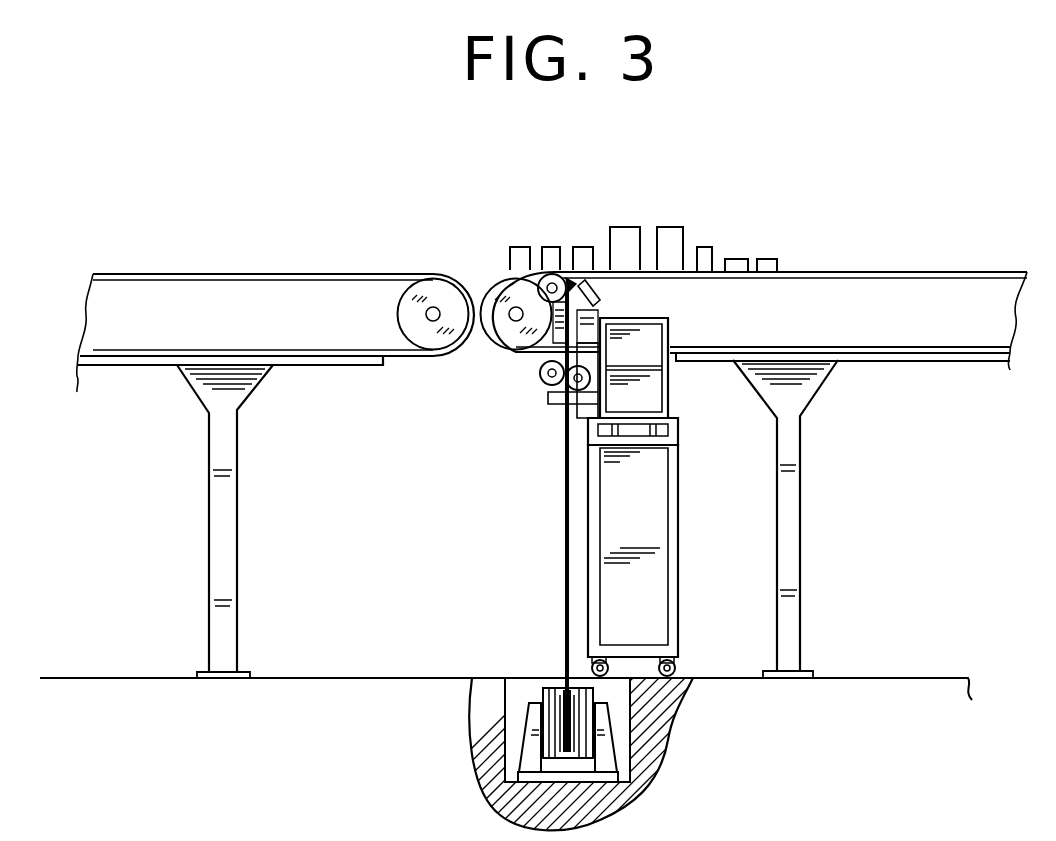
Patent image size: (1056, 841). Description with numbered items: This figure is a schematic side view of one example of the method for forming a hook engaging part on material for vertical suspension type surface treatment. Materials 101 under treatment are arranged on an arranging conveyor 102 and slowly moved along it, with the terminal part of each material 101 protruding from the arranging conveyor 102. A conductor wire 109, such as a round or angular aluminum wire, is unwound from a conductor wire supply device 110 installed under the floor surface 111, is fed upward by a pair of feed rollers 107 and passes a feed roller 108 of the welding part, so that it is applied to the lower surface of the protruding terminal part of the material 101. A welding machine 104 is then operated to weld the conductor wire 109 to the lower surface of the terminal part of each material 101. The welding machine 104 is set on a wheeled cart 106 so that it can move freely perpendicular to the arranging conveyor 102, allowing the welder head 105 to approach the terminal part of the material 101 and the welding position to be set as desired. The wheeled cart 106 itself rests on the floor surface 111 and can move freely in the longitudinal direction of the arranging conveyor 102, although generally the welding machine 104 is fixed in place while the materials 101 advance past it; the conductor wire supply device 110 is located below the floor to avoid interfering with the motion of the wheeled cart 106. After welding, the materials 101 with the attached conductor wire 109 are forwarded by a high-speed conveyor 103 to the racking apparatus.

The material under treatment 101 is at (628, 226).
The arranging conveyor 102 is at (843, 272).
The high-speed conveyor 103 is at (318, 262).
The welding machine 104 is at (676, 323).
The welder head 105 is at (576, 283).
The wheeled cart 106 is at (680, 466).
The feed rollers 107 is at (540, 375).
The feed roller of the welding part 108 is at (527, 297).
The conductor wire 109 is at (565, 510).
The conductor wire supply device 110 is at (598, 747).
The floor surface 111 is at (865, 678).